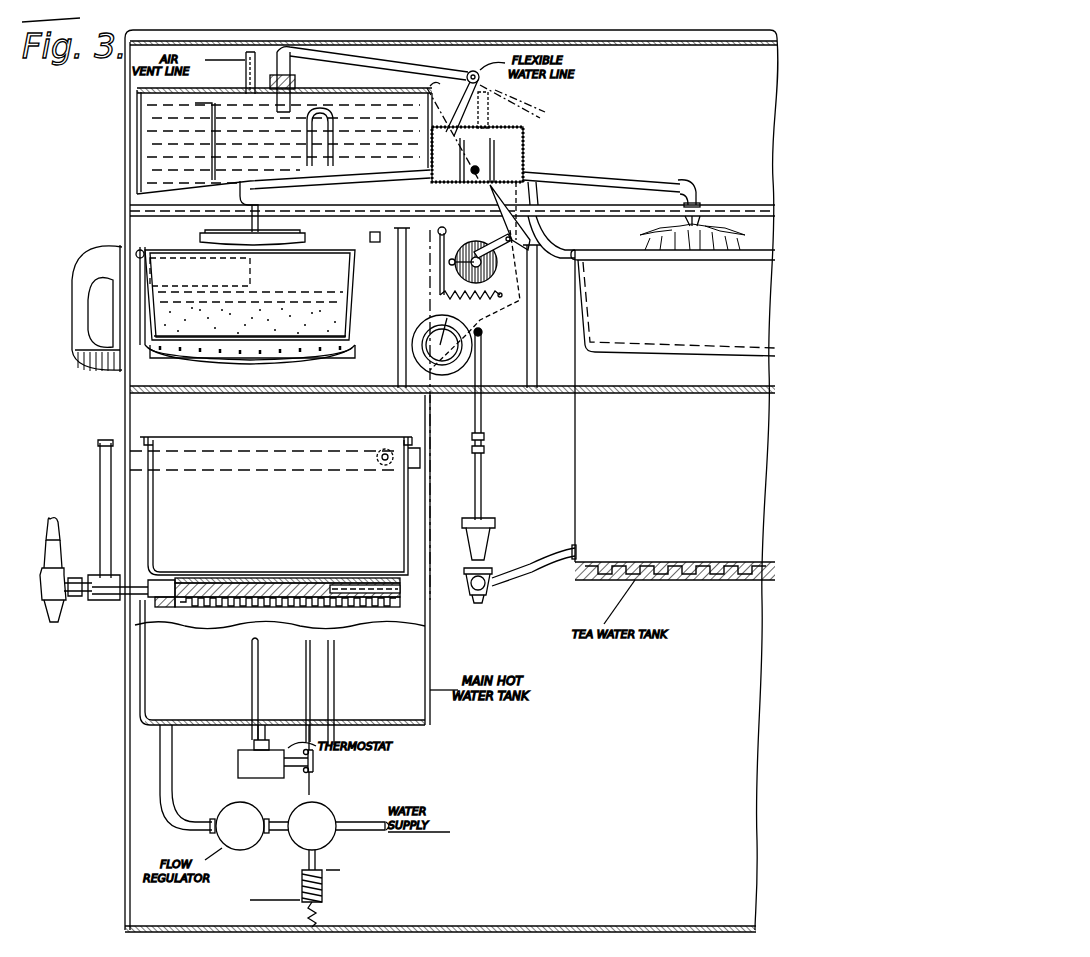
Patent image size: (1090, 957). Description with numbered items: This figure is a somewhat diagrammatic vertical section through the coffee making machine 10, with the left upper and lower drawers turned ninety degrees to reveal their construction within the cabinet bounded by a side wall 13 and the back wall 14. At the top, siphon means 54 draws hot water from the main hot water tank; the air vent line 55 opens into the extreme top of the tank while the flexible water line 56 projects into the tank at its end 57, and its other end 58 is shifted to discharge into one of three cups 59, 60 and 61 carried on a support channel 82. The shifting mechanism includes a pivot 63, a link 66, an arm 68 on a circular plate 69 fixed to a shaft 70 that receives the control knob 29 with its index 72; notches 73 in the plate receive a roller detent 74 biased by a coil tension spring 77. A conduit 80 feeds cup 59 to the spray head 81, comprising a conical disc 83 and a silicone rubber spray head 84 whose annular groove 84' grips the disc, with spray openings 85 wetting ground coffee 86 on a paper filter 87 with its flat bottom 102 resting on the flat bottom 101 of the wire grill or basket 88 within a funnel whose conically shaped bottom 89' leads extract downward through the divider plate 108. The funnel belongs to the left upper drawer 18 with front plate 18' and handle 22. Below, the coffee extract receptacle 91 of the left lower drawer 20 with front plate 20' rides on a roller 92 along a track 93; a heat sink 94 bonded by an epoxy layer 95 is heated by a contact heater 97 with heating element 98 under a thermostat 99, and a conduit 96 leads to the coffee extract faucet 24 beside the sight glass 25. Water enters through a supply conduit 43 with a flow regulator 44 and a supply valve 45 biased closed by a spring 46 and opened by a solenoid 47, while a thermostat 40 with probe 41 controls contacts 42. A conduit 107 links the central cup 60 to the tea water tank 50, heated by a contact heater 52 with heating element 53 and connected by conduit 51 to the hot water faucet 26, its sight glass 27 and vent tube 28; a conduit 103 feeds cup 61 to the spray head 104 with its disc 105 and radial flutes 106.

The coffee making machine 10 is at (89, 122).
The side wall 13 is at (124, 152).
The back wall 14 is at (724, 135).
The left upper drawer 18 is at (66, 212).
The front plate 18' is at (100, 382).
The left lower drawer 20 is at (57, 412).
The front plate 20' is at (229, 506).
The handle 22 is at (90, 280).
The coffee extract faucet 24 is at (68, 568).
The sight glass 25 is at (98, 492).
The hot water faucet 26 is at (495, 572).
The sight glass 27 is at (482, 466).
The vent tube 28 is at (482, 412).
The control knob 29 is at (445, 360).
The thermostat 40 is at (238, 758).
The probe 41 is at (207, 103).
The contacts 42 is at (306, 773).
The supply conduit 43 is at (352, 822).
The flow regulator 44 is at (232, 814).
The supply valve 45 is at (318, 808).
The spring 46 is at (320, 913).
The solenoid 47 is at (325, 889).
The tea water tank 50 is at (575, 472).
The conduit 51 is at (545, 558).
The contact heater 52 is at (690, 575).
The heating element 53 is at (652, 582).
The siphon means 54 is at (395, 55).
The air vent line 55 is at (252, 50).
The flexible water line 56 is at (405, 66).
The end of flexible water line 57 is at (276, 115).
The other end of flexible water line 58 is at (505, 104).
The cup 59 is at (440, 150).
The central cup 60 is at (480, 150).
The cup 61 is at (512, 153).
The pivot 63 is at (480, 76).
The link 66 is at (515, 225).
The arm 68 is at (500, 222).
The circular plate 69 is at (450, 225).
The shaft 70 is at (473, 292).
The index 72 is at (429, 325).
The notch 73 is at (480, 258).
The roller detent 74 is at (455, 258).
The coil tension spring 77 is at (505, 290).
The conduit 80 is at (370, 184).
The spray head 81 is at (186, 217).
The support channel 82 is at (370, 230).
The conical disc 83 is at (238, 224).
The spray head 84 is at (275, 234).
The annular groove 84' is at (184, 232).
The spray openings 85 is at (276, 250).
The ground coffee 86 is at (344, 356).
The paper filter 87 is at (149, 284).
The wire grill or basket 88 is at (349, 292).
The conically shaped bottom 89' is at (314, 369).
The coffee extract receptacle 91 is at (408, 498).
The roller 92 is at (382, 450).
The track 93 is at (412, 447).
The heat sink 94 is at (286, 583).
The layer of epoxy cement 95 is at (236, 578).
The conduit 96 is at (160, 580).
The contact heater 97 is at (226, 608).
The heating element 98 is at (192, 608).
The thermostat 99 is at (366, 578).
The flat bottom 101 is at (285, 345).
The flat bottom 102 is at (262, 340).
The conduit 103 is at (608, 182).
The spray head 104 is at (725, 190).
The disc 105 is at (700, 252).
The radial flutes 106 is at (705, 240).
The conduit 107 is at (555, 218).
The divider plate 108 is at (498, 386).